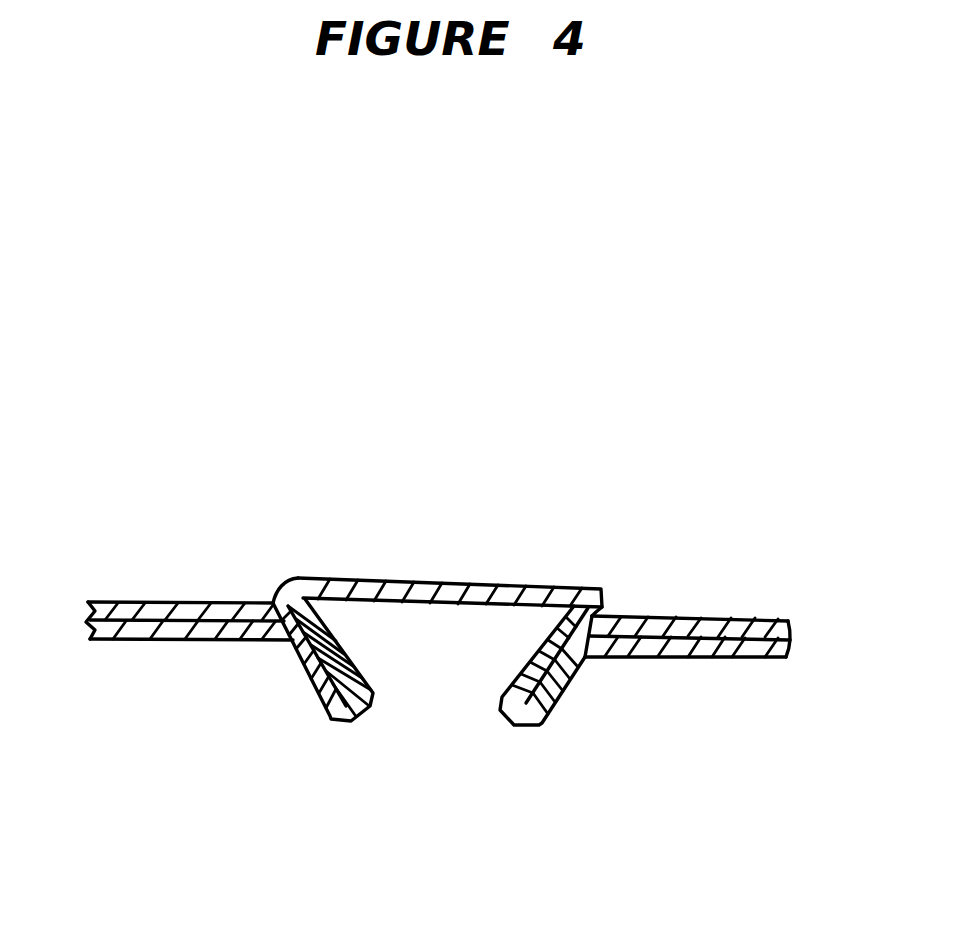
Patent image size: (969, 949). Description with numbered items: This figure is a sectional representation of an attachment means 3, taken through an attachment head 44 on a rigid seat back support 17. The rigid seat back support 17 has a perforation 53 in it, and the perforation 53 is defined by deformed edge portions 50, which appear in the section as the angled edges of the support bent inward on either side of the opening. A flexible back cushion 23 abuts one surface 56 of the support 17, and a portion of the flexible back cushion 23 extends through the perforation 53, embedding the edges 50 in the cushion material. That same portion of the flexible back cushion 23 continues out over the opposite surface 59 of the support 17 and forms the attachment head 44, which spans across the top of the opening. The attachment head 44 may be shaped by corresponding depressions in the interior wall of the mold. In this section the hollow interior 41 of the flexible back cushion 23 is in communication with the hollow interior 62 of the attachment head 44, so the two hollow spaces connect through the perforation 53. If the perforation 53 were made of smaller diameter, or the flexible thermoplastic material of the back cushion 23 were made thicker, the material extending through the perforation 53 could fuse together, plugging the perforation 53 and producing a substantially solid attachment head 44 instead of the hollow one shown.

The attachment means 3 is at (230, 857).
The rigid seat back support 17 is at (166, 601).
The flexible back cushion 23 is at (143, 641).
The hollow interior 41 is at (622, 818).
The attachment head 44 is at (426, 582).
The deformed edge portions 50 is at (304, 672).
The perforation 53 is at (437, 722).
The surface 56 is at (230, 641).
The surface 59 is at (200, 602).
The hollow interior 62 is at (458, 647).